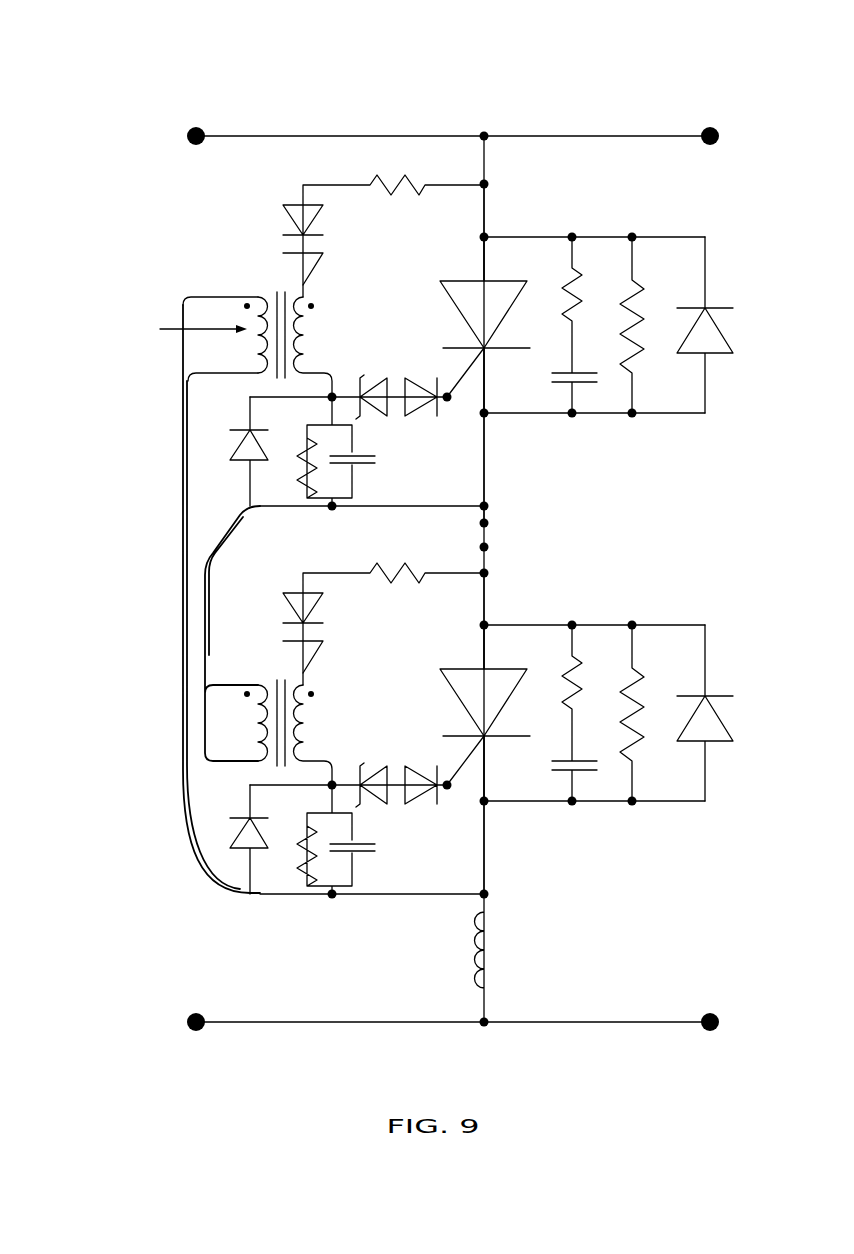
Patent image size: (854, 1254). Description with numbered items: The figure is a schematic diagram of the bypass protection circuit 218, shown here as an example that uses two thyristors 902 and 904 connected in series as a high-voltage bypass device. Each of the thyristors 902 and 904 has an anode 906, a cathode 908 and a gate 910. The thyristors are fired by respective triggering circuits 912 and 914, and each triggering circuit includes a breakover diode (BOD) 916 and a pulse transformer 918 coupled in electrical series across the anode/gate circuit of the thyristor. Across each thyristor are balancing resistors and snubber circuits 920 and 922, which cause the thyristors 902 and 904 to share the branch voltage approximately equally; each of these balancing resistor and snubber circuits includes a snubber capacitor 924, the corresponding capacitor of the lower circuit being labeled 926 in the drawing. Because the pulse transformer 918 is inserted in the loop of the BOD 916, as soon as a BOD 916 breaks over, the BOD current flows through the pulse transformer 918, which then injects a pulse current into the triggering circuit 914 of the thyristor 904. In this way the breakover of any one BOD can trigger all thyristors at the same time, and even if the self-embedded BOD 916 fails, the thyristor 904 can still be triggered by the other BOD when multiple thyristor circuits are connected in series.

The bypass protection circuit 218 is at (665, 66).
The thyristor 902 is at (457, 313).
The thyristor 904 is at (457, 701).
The anode 906 is at (486, 258).
The cathode 908 is at (488, 384).
The gate 910 is at (465, 380).
The triggering circuit 912 is at (172, 188).
The triggering circuit 914 is at (160, 705).
The breakover diode (BOD) 916 is at (340, 242).
The pulse transformer 918 is at (305, 341).
The balancing resistors and snubber circuit 920 is at (746, 321).
The balancing resistors and snubber circuit 922 is at (746, 709).
The snubber capacitor 924 is at (578, 384).
The second snubber RC network 926 is at (578, 772).